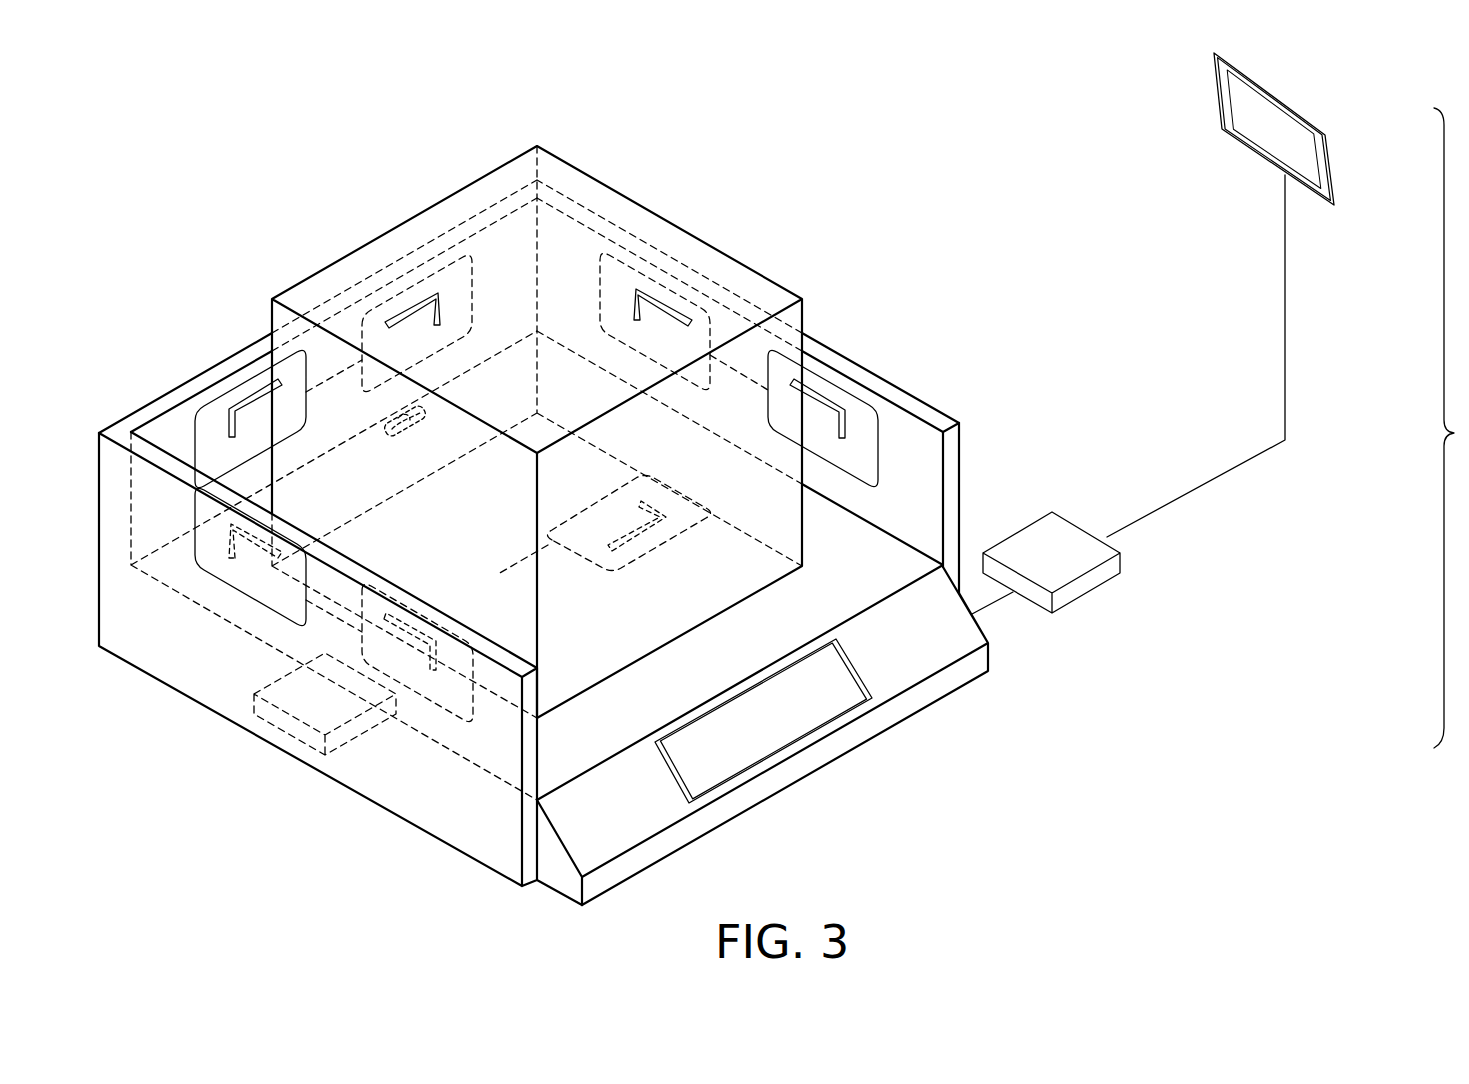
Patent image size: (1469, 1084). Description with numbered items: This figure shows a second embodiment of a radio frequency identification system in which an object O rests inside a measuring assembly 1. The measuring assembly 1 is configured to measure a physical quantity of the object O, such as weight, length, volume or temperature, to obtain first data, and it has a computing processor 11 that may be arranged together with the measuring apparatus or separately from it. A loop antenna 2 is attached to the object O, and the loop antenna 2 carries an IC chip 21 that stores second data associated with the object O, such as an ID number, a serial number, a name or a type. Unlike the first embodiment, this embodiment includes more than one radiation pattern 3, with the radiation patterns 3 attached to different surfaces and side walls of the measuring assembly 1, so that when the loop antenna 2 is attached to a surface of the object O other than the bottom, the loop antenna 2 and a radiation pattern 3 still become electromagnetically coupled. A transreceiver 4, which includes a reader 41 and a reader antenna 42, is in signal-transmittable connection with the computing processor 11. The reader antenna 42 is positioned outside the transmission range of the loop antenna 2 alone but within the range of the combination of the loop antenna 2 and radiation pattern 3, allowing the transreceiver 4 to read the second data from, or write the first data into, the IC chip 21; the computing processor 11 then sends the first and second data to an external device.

The measuring assembly 1 is at (556, 542).
The computing processor 11 is at (293, 722).
The loop antenna 2 is at (436, 417).
The IC chip 21 is at (413, 403).
The radiation pattern 3 is at (214, 418).
The transreceiver 4 is at (1226, 400).
The reader 41 is at (1090, 580).
The reader antenna 42 is at (1326, 148).
The object O is at (393, 245).